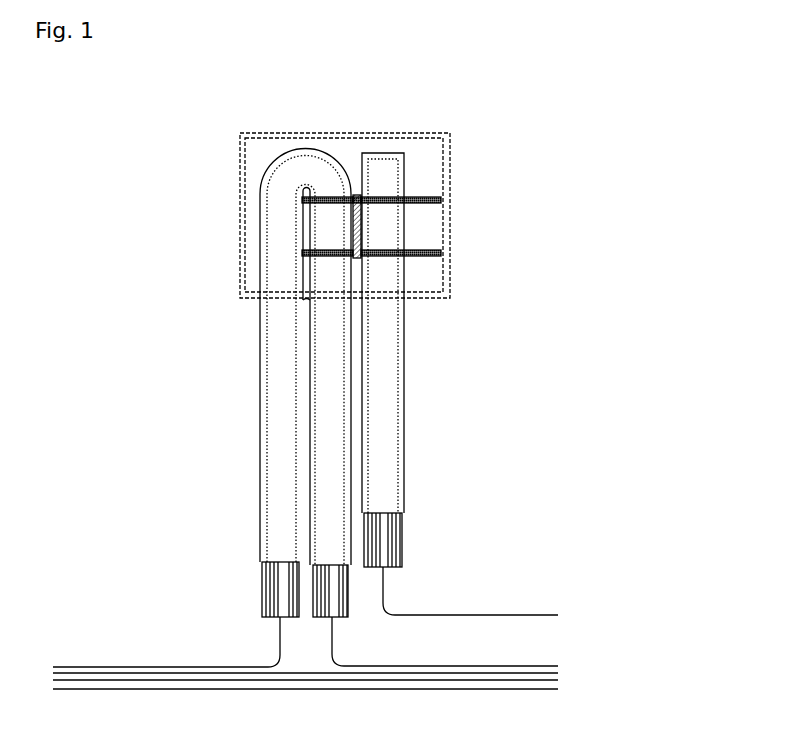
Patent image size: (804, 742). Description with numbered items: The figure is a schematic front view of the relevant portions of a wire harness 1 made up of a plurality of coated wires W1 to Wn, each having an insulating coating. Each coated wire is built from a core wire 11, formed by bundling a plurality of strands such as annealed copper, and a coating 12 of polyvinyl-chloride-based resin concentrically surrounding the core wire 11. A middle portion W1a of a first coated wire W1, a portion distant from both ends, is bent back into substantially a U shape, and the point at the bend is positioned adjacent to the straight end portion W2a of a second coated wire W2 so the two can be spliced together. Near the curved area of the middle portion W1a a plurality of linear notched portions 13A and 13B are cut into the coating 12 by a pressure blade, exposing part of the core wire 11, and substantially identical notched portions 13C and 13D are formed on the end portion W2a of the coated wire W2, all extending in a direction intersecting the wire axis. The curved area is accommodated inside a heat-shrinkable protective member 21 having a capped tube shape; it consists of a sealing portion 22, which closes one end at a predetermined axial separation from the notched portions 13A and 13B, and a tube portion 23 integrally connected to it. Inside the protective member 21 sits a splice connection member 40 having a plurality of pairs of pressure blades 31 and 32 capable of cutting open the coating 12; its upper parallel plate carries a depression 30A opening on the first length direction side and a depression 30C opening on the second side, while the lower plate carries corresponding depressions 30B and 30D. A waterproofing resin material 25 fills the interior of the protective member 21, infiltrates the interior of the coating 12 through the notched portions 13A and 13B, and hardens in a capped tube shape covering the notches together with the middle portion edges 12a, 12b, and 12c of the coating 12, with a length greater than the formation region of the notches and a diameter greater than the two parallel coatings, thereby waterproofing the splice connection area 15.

The wire harness 1 is at (106, 659).
The core wire 11 is at (405, 545).
The coating 12 is at (405, 492).
The middle portion edge 12a is at (340, 188).
The middle portion edge 12b is at (303, 272).
The middle portion edge 12c is at (335, 208).
The notched portion 13A is at (324, 183).
The notched portion 13B is at (331, 268).
The notched portion 13C is at (386, 188).
The notched portion 13D is at (387, 267).
The splice connection area 15 is at (359, 143).
The protective member 21 is at (374, 196).
The sealing portion 22 is at (400, 133).
The tube portion 23 is at (447, 150).
The resin material 25 is at (365, 232).
The depression 30A is at (237, 189).
The depression 30B is at (300, 254).
The depression 30C is at (443, 200).
The depression 30D is at (443, 256).
The pressure blade 31 is at (327, 200).
The pressure blade 32 is at (300, 198).
The splice connection member 40 is at (352, 194).
The first coated wire W1 is at (518, 664).
The second coated wire W2 is at (512, 614).
The coated wire Wn is at (512, 692).
The middle portion W1a is at (258, 342).
The end portion W2a is at (406, 329).